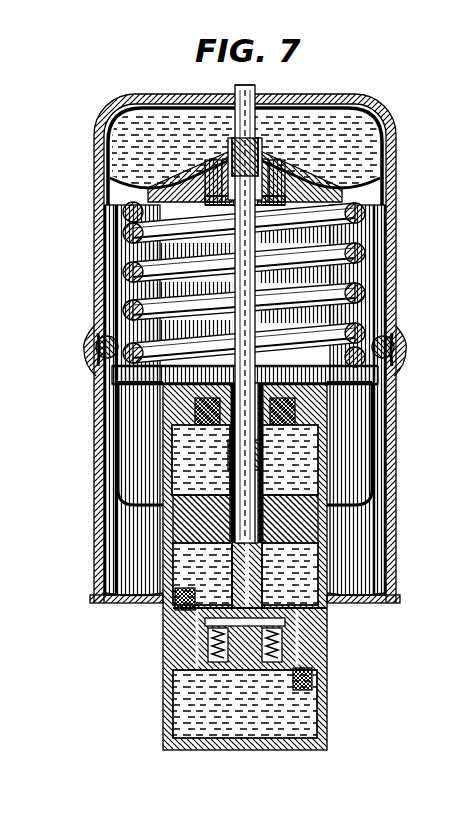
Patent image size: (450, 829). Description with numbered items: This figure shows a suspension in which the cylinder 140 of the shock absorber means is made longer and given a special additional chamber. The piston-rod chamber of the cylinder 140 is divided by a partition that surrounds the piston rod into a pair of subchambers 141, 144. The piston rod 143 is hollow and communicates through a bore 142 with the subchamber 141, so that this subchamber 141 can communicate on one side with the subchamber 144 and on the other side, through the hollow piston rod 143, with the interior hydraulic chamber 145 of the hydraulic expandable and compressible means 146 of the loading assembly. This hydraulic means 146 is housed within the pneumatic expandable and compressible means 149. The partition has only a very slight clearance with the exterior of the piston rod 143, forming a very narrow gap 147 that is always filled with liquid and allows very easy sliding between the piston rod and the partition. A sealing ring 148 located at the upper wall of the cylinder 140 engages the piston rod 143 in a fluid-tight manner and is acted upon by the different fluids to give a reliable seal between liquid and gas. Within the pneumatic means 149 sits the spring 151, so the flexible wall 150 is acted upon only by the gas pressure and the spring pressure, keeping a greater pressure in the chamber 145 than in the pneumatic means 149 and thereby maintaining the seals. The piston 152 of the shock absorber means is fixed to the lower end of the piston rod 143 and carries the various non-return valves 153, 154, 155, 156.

The cylinder 140 is at (348, 552).
The subchamber 141 is at (332, 447).
The bore 142 is at (262, 458).
The piston rod 143 is at (253, 517).
The subchamber 144 is at (327, 600).
The interior hydraulic chamber 145 is at (385, 133).
The hydraulic expandable and compressible means 146 is at (115, 150).
The gap 147 is at (230, 518).
The sealing ring 148 is at (218, 430).
The pneumatic expandable and compressible means 149 is at (367, 276).
The flexible wall 150 is at (375, 185).
The spring 151 is at (133, 272).
The piston 152 is at (170, 664).
The non-return valve 153 is at (278, 615).
The non-return valve 154 is at (325, 668).
The non-return valve 155 is at (175, 620).
The non-return valve 156 is at (220, 668).